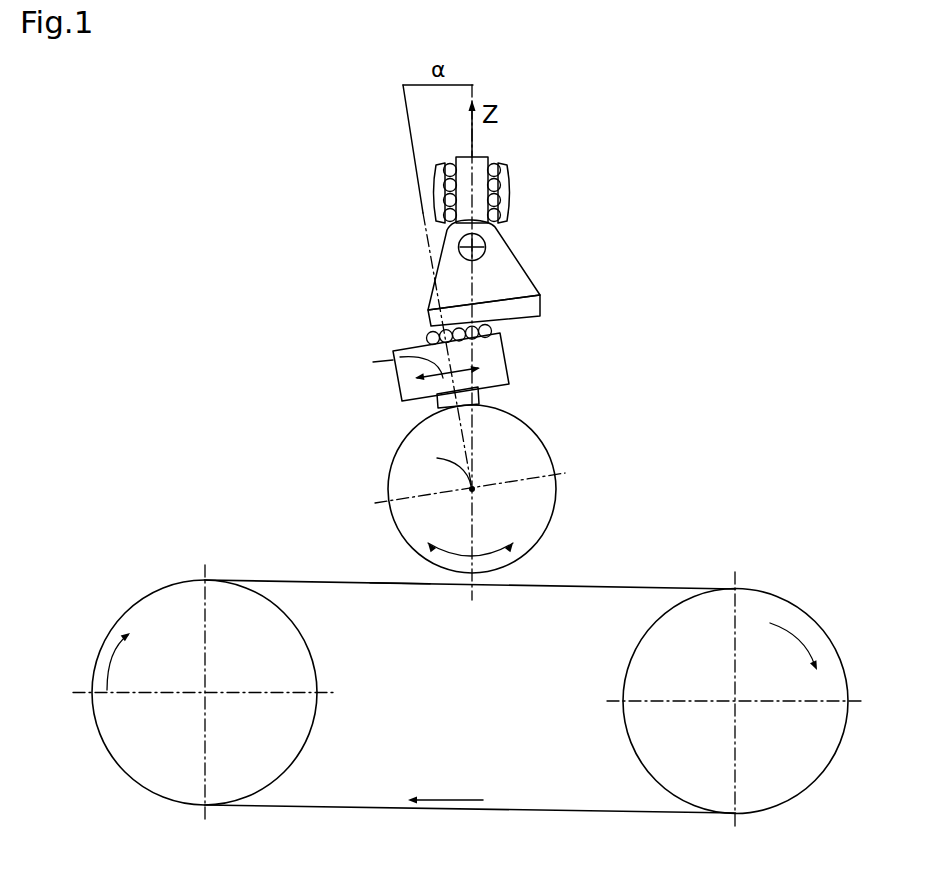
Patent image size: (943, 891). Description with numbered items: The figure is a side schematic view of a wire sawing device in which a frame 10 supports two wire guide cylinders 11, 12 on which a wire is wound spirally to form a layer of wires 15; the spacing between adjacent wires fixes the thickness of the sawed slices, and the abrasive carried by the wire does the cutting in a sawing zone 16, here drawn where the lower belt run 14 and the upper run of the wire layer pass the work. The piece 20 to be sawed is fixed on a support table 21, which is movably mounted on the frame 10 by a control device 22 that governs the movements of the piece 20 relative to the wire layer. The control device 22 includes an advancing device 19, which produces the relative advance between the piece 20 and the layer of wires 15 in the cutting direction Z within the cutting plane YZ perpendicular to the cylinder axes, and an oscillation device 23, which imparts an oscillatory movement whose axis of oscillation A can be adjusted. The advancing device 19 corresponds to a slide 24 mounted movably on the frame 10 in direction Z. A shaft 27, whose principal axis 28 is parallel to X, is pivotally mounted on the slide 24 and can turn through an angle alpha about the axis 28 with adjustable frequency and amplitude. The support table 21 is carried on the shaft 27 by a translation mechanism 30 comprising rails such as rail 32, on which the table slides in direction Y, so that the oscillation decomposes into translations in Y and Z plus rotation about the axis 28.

The frame 10 is at (501, 207).
The wire guide cylinder 11 is at (170, 600).
The wire guide cylinder 12 is at (753, 613).
The belt lower run 14 is at (493, 810).
The layer of wires 15 is at (590, 583).
The sawing zone 16 is at (403, 568).
The advancing device 19 is at (536, 166).
The piece to be sawed 20 is at (521, 463).
The support table 21 is at (490, 361).
The control device 22 is at (410, 178).
The oscillation device 23 is at (458, 334).
The slide 24 is at (480, 157).
The shaft 27 is at (519, 251).
The principal axis 28 is at (487, 255).
The translation mechanism 30 is at (504, 328).
The rail 32 is at (523, 300).